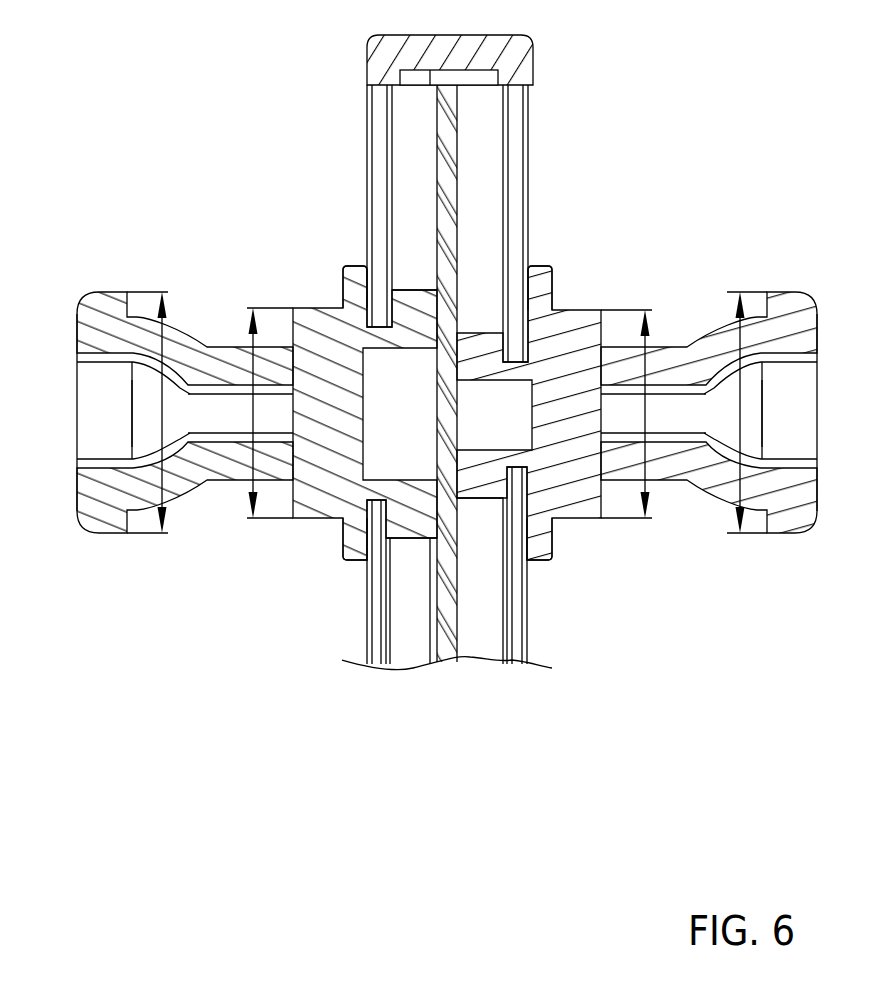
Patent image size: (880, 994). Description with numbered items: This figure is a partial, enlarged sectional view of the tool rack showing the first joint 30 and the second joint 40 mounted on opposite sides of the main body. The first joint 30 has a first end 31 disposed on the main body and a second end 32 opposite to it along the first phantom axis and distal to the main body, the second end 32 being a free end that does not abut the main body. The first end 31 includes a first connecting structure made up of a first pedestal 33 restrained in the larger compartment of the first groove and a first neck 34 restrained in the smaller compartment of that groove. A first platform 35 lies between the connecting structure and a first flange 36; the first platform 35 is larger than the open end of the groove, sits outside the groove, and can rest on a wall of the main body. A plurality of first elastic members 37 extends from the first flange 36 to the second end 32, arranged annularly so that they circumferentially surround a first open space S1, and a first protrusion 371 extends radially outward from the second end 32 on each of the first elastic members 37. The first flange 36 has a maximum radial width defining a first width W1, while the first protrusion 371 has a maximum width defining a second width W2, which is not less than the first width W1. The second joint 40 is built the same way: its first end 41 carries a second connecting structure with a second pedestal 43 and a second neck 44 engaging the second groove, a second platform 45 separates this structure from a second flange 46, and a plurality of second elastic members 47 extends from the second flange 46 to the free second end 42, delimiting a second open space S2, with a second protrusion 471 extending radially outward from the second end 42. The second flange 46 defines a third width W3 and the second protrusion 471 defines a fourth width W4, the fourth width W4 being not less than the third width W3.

The first joint 30 is at (449, 352).
The first end 31 is at (488, 291).
The second end 32 is at (837, 350).
The first pedestal 33 is at (483, 500).
The first neck 34 is at (512, 355).
The first platform 35 is at (543, 552).
The first flange 36 is at (572, 518).
The first elastic members 37 is at (684, 470).
The first protrusion 371 is at (796, 534).
The second joint 40 is at (306, 272).
The first end 41 is at (406, 252).
The second end 42 is at (57, 350).
The second pedestal 43 is at (415, 538).
The second neck 44 is at (383, 262).
The second platform 45 is at (352, 552).
The second flange 46 is at (322, 518).
The second elastic members 47 is at (210, 470).
The second protrusion 471 is at (98, 534).
The first open space S1 is at (804, 426).
The second open space S2 is at (90, 426).
The first width W1 is at (647, 415).
The second width W2 is at (740, 380).
The third width W3 is at (253, 405).
The fourth width W4 is at (166, 380).